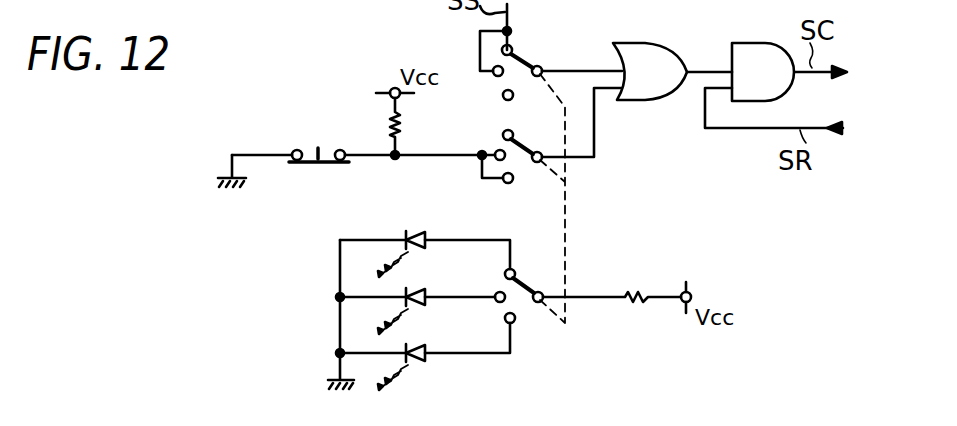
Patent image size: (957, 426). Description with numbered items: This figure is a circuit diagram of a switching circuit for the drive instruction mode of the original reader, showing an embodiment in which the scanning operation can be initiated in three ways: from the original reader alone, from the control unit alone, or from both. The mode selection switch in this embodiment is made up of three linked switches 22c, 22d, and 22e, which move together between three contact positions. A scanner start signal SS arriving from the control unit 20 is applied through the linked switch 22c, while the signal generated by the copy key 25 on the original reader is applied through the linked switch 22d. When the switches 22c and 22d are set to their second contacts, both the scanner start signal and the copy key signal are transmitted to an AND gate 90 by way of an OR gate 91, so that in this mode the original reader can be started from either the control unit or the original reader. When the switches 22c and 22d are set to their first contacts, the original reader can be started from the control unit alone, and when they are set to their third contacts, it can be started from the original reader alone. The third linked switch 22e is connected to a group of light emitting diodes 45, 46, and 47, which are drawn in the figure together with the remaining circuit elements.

The control circuit 20 is at (376, 5).
The copy key 25 is at (308, 164).
The linked switch 22c is at (538, 62).
The linked switch 22d is at (527, 162).
The linked switch 22e is at (534, 302).
The light emitting diode 45 is at (418, 231).
The light emitting diode 46 is at (418, 289).
The light emitting diode 47 is at (418, 347).
The AND gate 90 is at (766, 43).
The OR gate 91 is at (652, 43).